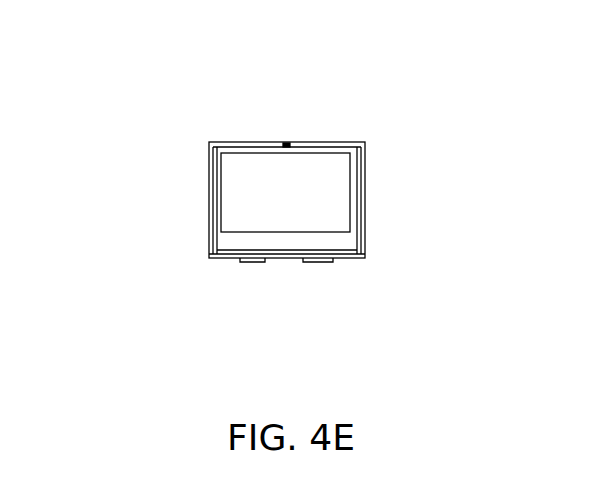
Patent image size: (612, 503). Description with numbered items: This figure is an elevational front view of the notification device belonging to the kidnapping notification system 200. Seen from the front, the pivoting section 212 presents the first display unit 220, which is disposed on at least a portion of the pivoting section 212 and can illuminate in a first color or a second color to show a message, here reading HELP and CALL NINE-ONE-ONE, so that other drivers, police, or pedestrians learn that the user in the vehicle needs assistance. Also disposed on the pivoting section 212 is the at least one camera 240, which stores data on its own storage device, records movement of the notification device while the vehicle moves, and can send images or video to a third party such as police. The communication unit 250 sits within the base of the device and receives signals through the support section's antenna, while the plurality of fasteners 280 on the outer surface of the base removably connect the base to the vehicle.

The kidnapping notification system 200 is at (282, 168).
The pivoting section 212 is at (237, 143).
The first display unit 220 is at (341, 162).
The camera 240 is at (286, 143).
The communication unit 250 is at (213, 175).
The fasteners 280 is at (253, 263).